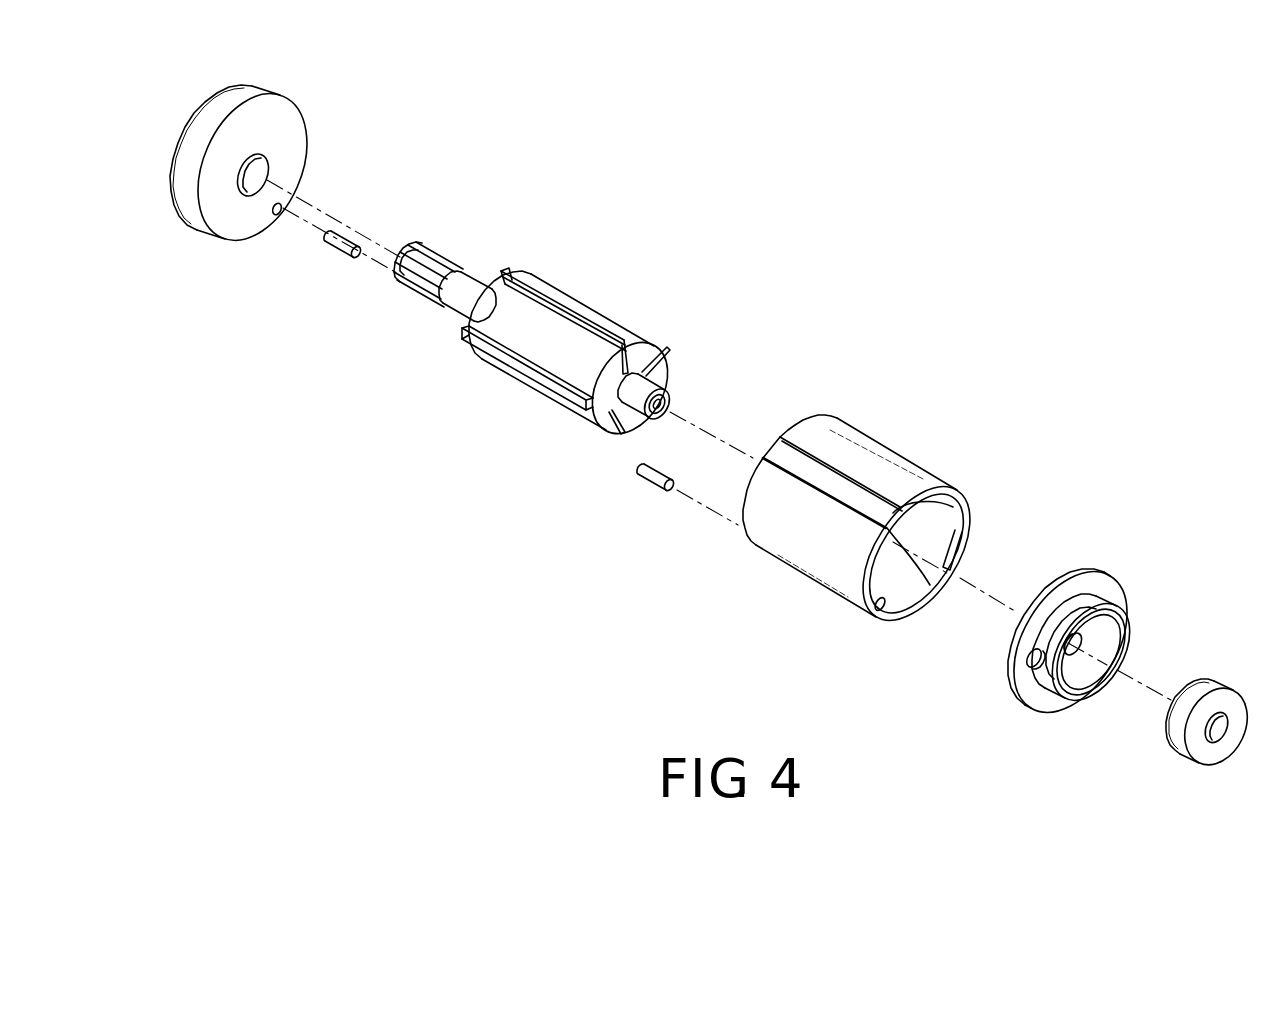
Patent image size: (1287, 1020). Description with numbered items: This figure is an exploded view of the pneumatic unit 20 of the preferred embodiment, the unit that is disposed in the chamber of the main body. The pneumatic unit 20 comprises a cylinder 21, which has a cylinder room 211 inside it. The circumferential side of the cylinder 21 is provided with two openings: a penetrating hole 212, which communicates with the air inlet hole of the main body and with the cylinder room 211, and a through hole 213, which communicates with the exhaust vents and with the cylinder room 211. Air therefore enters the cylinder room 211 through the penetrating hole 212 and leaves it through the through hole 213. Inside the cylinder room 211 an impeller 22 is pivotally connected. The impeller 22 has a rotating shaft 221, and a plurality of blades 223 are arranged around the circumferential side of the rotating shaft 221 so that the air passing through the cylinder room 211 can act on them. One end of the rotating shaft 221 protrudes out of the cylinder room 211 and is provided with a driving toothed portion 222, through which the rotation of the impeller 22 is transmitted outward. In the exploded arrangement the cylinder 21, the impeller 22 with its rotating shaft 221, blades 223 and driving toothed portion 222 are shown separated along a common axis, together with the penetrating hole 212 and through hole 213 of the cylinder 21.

The pneumatic unit 20 is at (828, 305).
The cylinder 21 is at (878, 453).
The cylinder room 211 is at (933, 552).
The penetrating hole 212 is at (1023, 660).
The through hole 213 is at (943, 517).
The impeller 22 is at (620, 330).
The rotating shaft 221 is at (478, 290).
The driving toothed portion 222 is at (433, 250).
The blades 223 is at (572, 287).